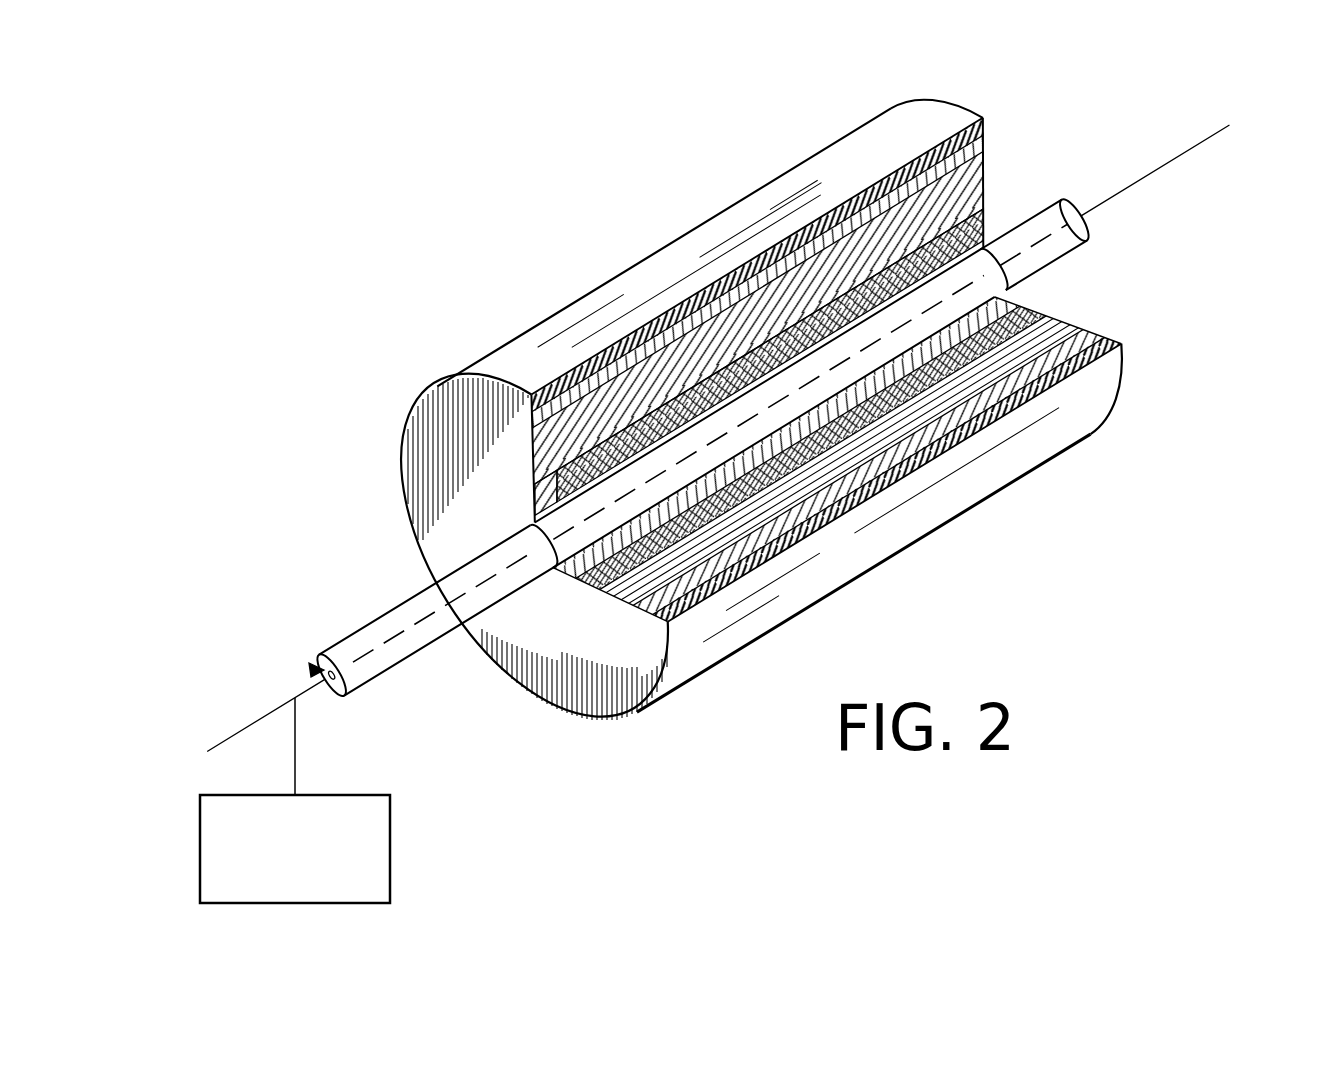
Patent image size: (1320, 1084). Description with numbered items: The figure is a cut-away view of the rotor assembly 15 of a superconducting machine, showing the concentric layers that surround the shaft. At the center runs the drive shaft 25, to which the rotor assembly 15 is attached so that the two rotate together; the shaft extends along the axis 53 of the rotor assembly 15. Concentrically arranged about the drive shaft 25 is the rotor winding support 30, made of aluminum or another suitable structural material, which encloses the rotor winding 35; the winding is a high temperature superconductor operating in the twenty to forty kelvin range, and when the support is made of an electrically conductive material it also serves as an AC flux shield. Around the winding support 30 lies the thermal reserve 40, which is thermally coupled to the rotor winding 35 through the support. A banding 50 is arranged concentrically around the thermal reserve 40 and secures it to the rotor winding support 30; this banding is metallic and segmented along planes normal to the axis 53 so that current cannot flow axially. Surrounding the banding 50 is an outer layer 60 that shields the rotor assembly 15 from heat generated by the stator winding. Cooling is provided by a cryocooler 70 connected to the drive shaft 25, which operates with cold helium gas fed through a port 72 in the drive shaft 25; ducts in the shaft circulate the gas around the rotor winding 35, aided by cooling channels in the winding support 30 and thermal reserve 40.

The rotor assembly 15 is at (423, 395).
The drive shaft 25 is at (393, 652).
The rotor winding support 30 is at (535, 457).
The rotor winding 35 is at (535, 502).
The thermal reserve 40 is at (577, 423).
The banding 50 is at (990, 138).
The axis 53 is at (1177, 160).
The outer layer 60 is at (985, 118).
The cryocooler 70 is at (393, 862).
The port 72 is at (318, 669).